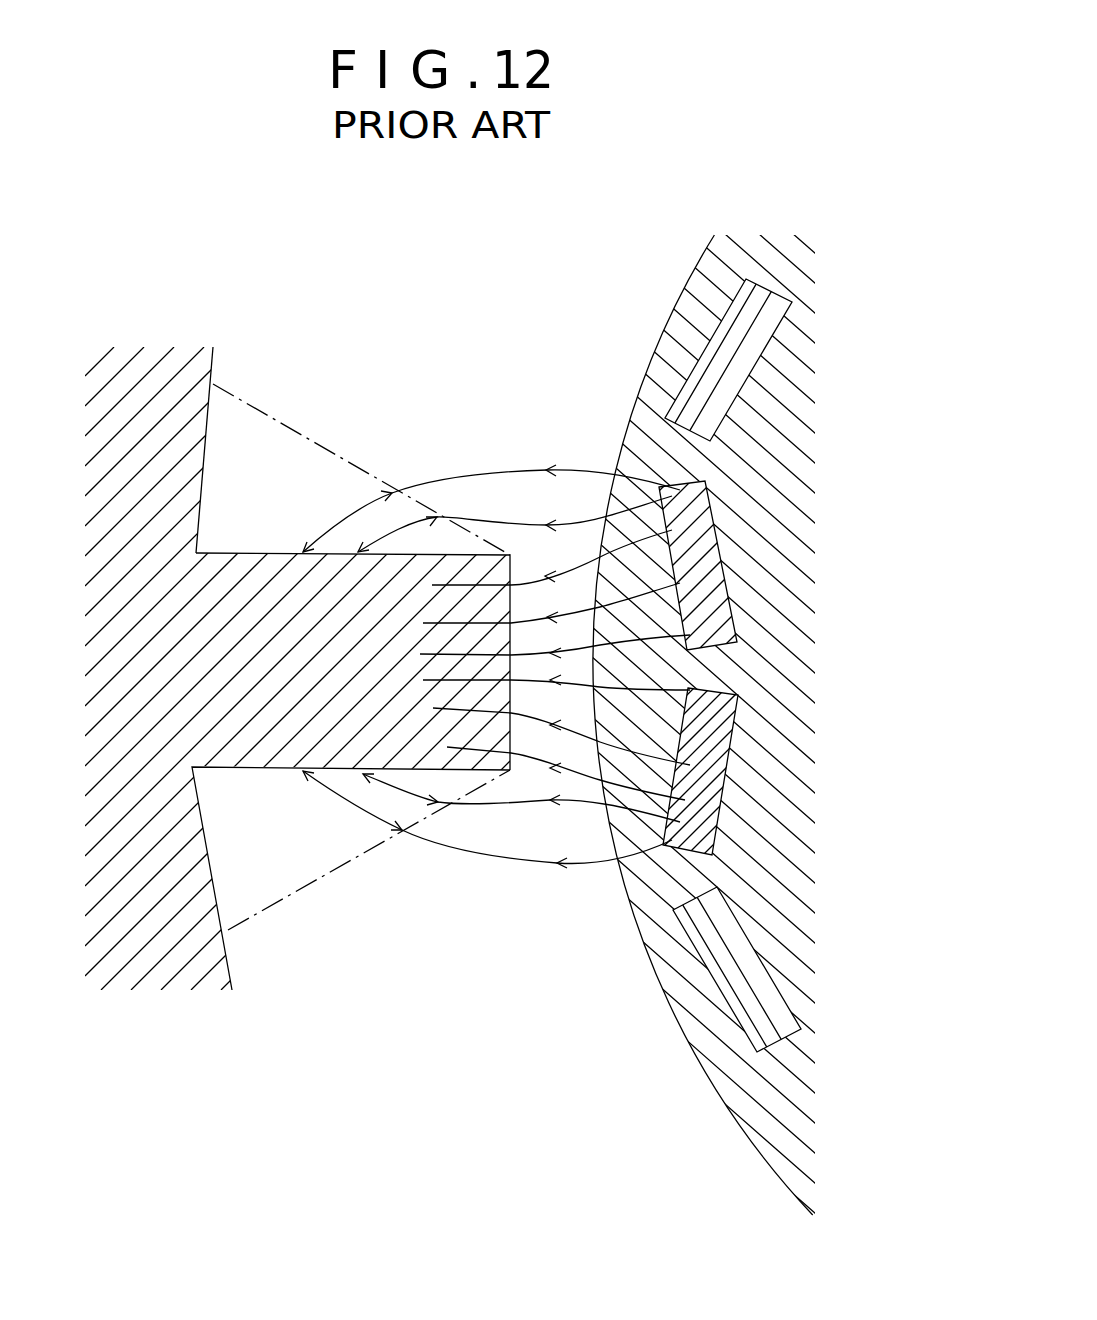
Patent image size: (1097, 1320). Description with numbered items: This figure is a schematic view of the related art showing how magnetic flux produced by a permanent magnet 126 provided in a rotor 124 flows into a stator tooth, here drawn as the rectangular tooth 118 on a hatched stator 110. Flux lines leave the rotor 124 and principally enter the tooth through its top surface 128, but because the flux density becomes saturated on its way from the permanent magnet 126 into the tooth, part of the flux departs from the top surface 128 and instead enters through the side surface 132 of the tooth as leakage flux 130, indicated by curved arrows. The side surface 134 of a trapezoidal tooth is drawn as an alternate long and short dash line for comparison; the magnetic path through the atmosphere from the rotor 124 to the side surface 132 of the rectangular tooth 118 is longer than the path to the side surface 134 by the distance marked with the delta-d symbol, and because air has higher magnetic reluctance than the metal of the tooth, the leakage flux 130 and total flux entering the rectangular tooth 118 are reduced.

The stator core 110 is at (213, 348).
The rectangular tooth 118 is at (232, 757).
The rotor 124 is at (643, 912).
The permanent magnet 126 is at (718, 953).
The top surface 128 is at (548, 575).
The leakage flux 130 is at (472, 480).
The side surface 132 is at (235, 553).
The side surface 134 is at (290, 427).